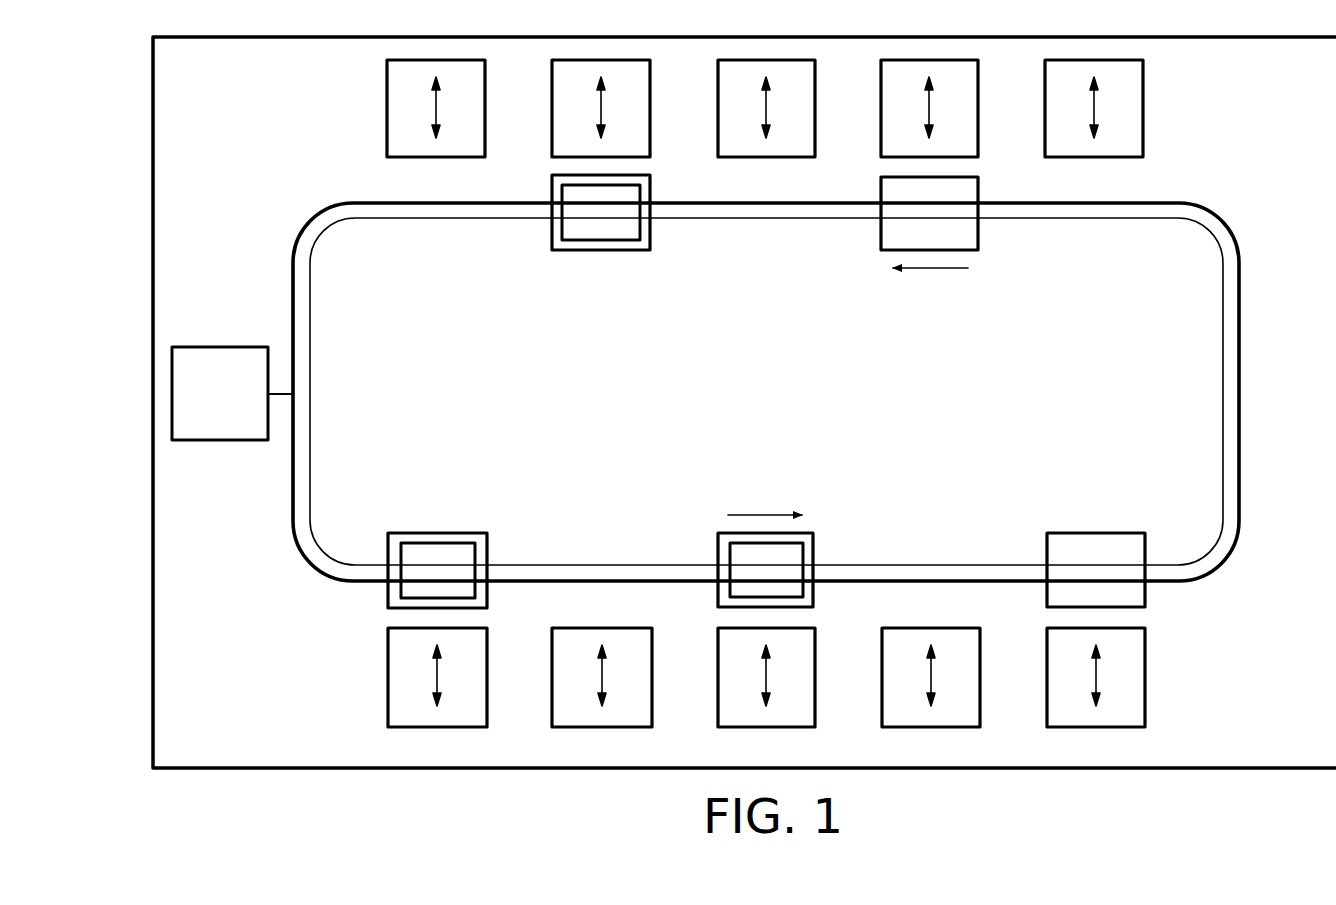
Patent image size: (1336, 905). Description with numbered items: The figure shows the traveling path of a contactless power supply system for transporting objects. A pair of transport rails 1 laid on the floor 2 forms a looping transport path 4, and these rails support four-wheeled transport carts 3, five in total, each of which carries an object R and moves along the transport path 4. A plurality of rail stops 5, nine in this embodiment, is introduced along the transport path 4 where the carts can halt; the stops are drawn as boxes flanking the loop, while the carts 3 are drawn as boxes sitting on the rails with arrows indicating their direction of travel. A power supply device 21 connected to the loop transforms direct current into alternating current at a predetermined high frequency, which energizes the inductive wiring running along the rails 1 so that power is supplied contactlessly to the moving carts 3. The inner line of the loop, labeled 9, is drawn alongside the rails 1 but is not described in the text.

The transport rails 1 is at (1228, 355).
The floor 2 is at (1082, 377).
The transport cart 3 is at (766, 391).
The transport path 4 is at (1224, 180).
The rail stop 5 is at (387, 107).
The primary conductor 9 is at (293, 258).
The power supply device 21 is at (220, 346).
The object R is at (597, 230).